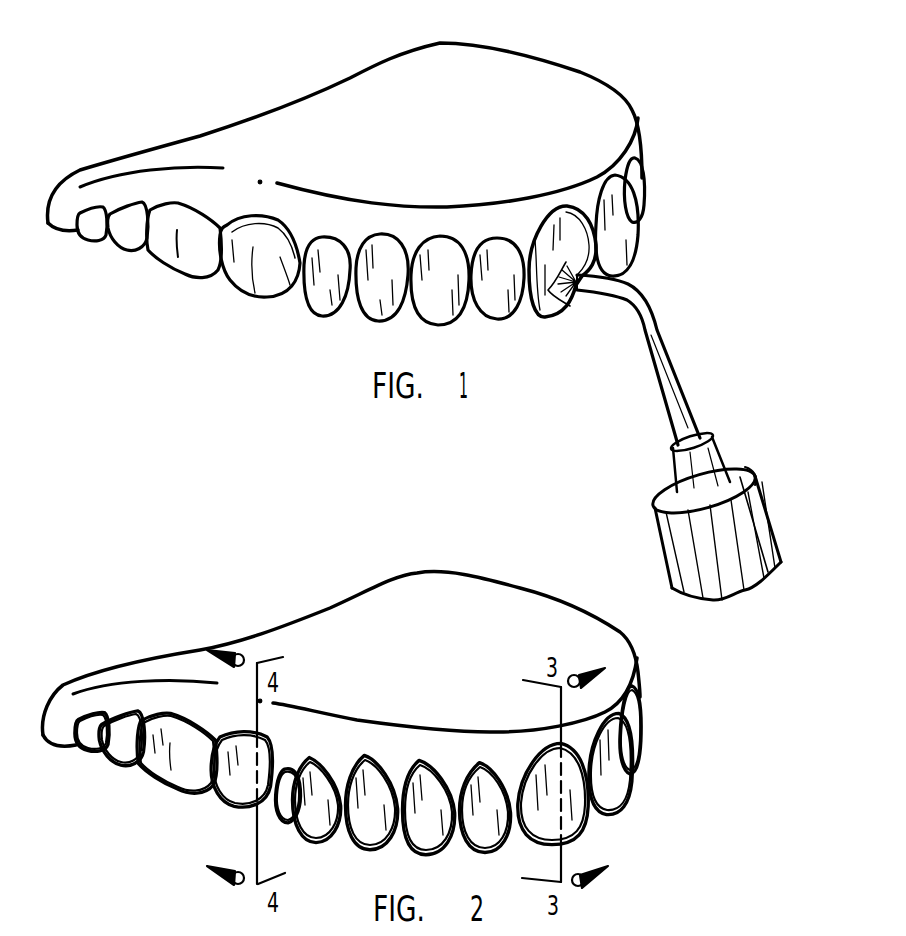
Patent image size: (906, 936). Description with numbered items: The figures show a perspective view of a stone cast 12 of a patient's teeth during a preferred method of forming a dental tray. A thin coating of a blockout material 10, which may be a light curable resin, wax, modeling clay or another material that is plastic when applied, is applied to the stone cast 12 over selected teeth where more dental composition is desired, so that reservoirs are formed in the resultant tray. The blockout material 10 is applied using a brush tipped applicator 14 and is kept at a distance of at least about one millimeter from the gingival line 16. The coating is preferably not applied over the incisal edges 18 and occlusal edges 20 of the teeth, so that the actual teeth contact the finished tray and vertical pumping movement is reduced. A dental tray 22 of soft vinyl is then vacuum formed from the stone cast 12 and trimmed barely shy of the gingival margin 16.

In FIG. 1, the blockout material 10 is at (558, 319).
In FIG. 1, the stone cast 12 is at (533, 98).
In FIG. 1, the brush tipped applicator 14 is at (645, 300).
In FIG. 1, the gingival line 16 is at (372, 233).
In FIG. 1, the incisal edges 18 is at (578, 303).
In FIG. 1, the occlusal edges 20 is at (246, 292).
In FIG. 2, the dental tray 22 is at (626, 797).